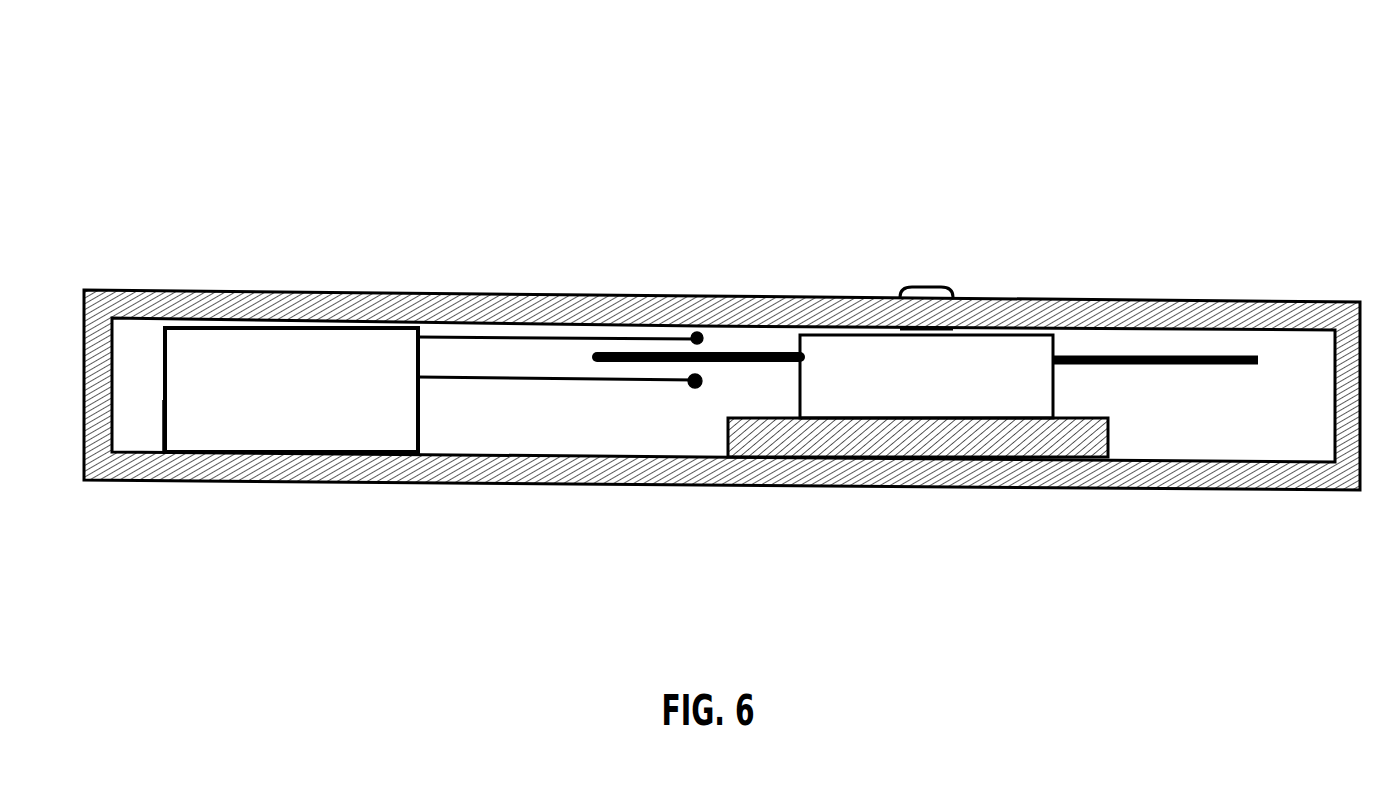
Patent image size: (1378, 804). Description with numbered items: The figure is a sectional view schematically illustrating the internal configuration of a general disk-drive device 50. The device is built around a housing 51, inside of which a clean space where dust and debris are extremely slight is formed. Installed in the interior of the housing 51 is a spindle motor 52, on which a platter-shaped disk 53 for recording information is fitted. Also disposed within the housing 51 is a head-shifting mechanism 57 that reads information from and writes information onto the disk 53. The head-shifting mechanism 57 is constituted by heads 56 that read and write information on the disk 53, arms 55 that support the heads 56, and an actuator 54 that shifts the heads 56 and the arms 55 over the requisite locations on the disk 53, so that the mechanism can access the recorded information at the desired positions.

The disk-drive device 50 is at (619, 26).
The housing 51 is at (1028, 306).
The spindle motor 52 is at (913, 385).
The disk 53 is at (1157, 356).
The actuator 54 is at (255, 363).
The arms 55 is at (502, 377).
The heads 56 is at (703, 385).
The head-shifting mechanism 57 is at (450, 392).